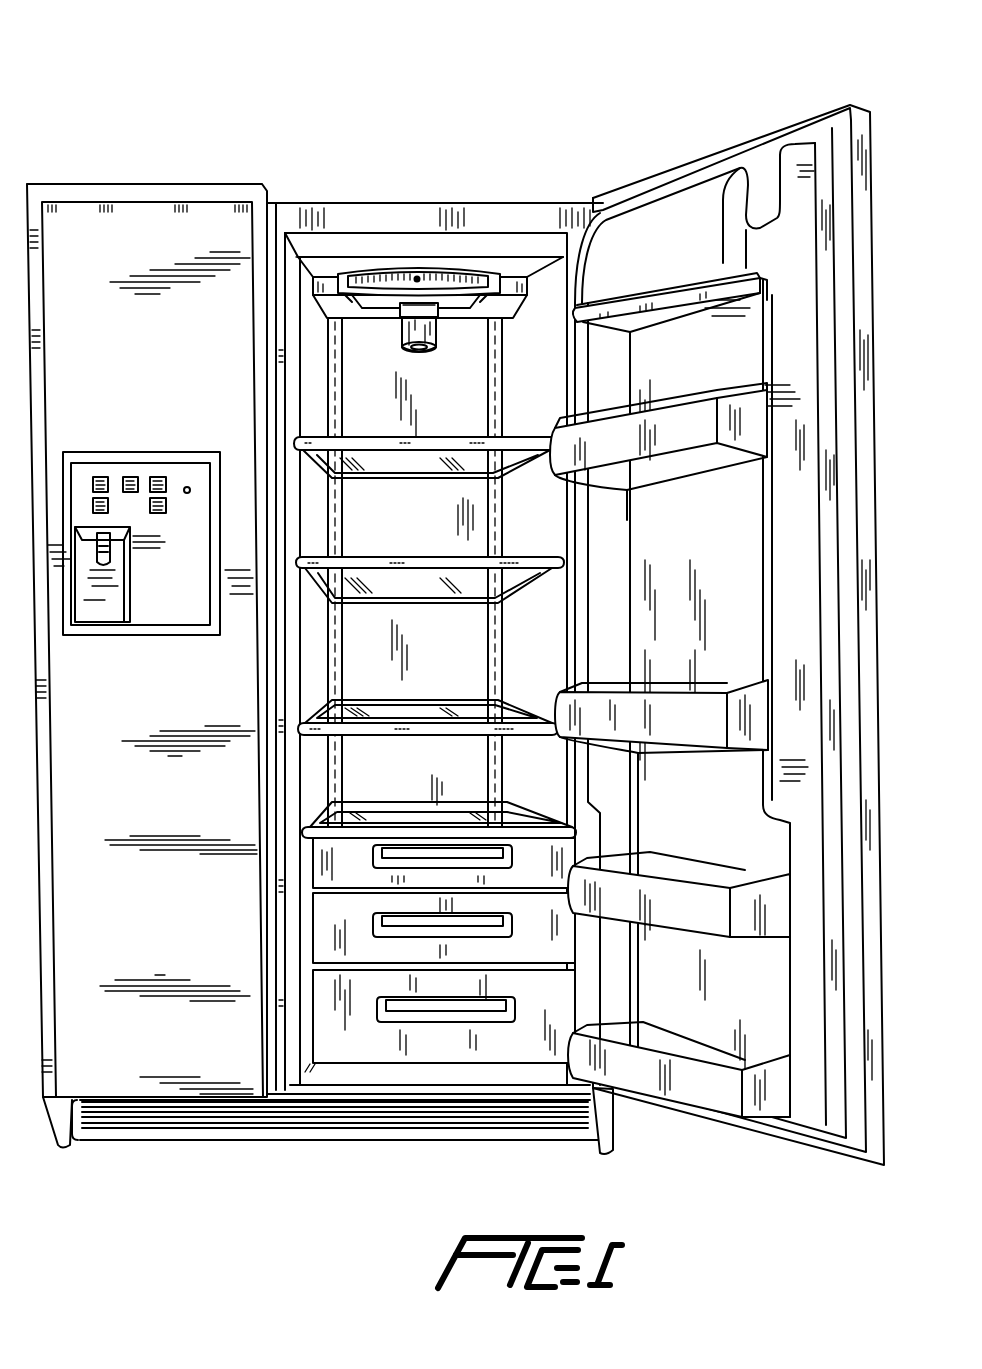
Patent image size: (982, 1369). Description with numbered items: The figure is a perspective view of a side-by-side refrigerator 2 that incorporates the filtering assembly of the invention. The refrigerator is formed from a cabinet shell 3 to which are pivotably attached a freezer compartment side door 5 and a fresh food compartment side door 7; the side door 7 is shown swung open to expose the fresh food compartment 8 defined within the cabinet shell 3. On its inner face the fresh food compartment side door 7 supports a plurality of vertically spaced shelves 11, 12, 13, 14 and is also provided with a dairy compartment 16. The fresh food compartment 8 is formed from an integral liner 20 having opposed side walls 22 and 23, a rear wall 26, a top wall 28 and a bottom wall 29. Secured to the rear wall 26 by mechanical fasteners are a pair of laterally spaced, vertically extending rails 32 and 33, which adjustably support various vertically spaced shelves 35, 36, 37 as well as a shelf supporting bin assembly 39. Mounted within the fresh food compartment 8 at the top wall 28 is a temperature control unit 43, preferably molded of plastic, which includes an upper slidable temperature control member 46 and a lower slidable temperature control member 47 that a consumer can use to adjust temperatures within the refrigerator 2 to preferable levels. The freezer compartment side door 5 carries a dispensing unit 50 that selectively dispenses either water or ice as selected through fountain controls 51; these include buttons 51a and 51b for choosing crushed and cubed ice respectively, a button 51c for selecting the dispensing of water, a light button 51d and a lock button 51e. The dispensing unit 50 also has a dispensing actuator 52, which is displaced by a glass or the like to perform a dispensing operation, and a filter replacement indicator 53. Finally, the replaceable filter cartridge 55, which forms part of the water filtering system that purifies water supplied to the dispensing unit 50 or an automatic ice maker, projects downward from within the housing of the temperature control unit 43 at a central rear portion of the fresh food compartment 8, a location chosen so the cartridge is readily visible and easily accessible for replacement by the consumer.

The side-by-side refrigerator 2 is at (533, 102).
The cabinet shell 3 is at (535, 203).
The freezer compartment side door 5 is at (147, 666).
The fresh food compartment side door 7 is at (806, 120).
The fresh food compartment 8 is at (372, 647).
The shelf 11 is at (667, 467).
The shelf 12 is at (698, 703).
The shelf 13 is at (678, 900).
The shelf 14 is at (690, 1072).
The dairy compartment 16 is at (667, 257).
The integral liner 20 is at (487, 228).
The side wall 22 is at (296, 340).
The side wall 23 is at (540, 528).
The rear wall 26 is at (428, 588).
The top wall 28 is at (327, 268).
The bottom wall 29 is at (383, 1075).
The rail 32 is at (340, 517).
The rail 33 is at (497, 663).
The shelf 35 is at (357, 446).
The shelf 36 is at (320, 600).
The shelf 37 is at (326, 735).
The shelf supporting bin assembly 39 is at (300, 858).
The temperature control unit 43 is at (441, 260).
The upper slidable temperature control member 46 is at (415, 272).
The lower slidable temperature control member 47 is at (418, 282).
The dispensing unit 50 is at (87, 446).
The fountain controls 51 is at (84, 474).
The button 51a is at (103, 477).
The button 51b is at (131, 477).
The button 51c is at (159, 477).
The light button 51d is at (158, 513).
The lock button 51e is at (103, 514).
The dispensing actuator 52 is at (103, 566).
The filter replacement indicator 53 is at (186, 487).
The filter cartridge 55 is at (432, 357).